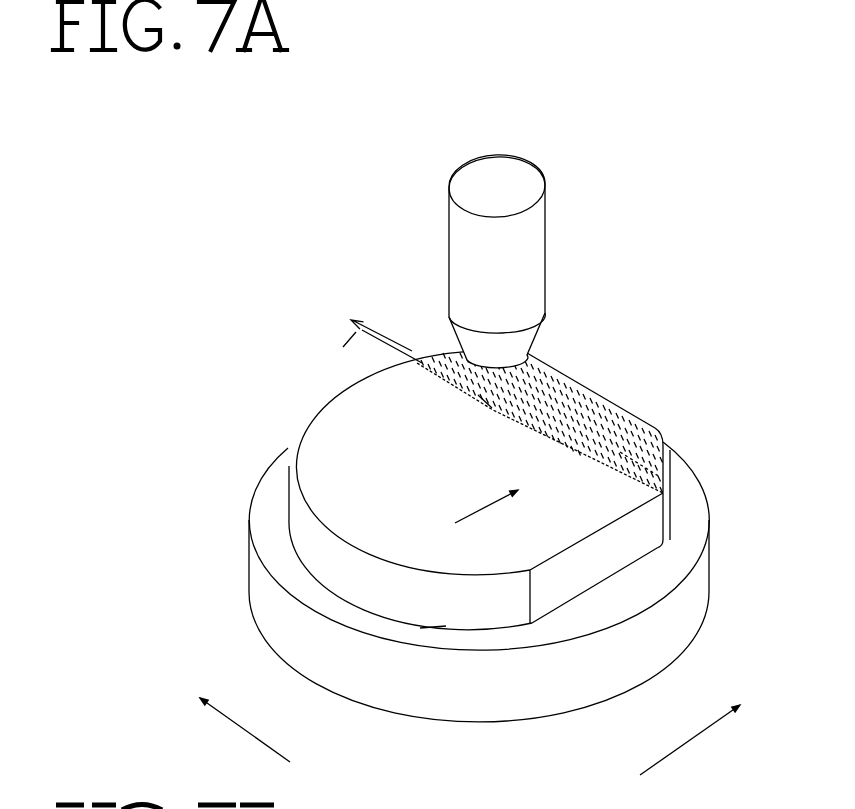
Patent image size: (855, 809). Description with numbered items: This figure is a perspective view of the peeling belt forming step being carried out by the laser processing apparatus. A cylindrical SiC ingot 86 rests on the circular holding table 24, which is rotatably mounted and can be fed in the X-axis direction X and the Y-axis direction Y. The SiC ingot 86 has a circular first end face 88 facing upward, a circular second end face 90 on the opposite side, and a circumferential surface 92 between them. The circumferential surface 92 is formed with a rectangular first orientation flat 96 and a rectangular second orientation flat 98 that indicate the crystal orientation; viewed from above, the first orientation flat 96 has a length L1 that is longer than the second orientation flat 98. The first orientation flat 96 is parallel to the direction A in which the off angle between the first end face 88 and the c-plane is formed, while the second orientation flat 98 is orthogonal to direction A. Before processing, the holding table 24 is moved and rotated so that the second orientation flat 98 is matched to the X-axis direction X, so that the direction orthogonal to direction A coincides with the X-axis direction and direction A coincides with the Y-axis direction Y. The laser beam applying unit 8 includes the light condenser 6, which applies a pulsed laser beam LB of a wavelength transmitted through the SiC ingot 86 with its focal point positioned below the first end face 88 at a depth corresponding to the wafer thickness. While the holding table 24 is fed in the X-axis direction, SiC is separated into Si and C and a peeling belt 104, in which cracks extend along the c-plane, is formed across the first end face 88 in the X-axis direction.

The light condenser 6 is at (458, 243).
The laser beam applying unit 8 is at (460, 199).
The holding table 24 is at (623, 663).
The SiC ingot 86 is at (320, 398).
The first end face 88 is at (318, 450).
The second end face 90 is at (433, 627).
The circumferential surface 92 is at (328, 566).
The first orientation flat 96 is at (620, 553).
The second orientation flat 98 is at (595, 390).
The peeling belt 104 is at (650, 430).
The length of the first orientation flat L1 is at (378, 331).
The pulsed laser beam LB is at (485, 408).
The direction in which the off angle is formed A is at (486, 503).
The X-axis direction X is at (245, 734).
The Y-axis direction Y is at (690, 740).